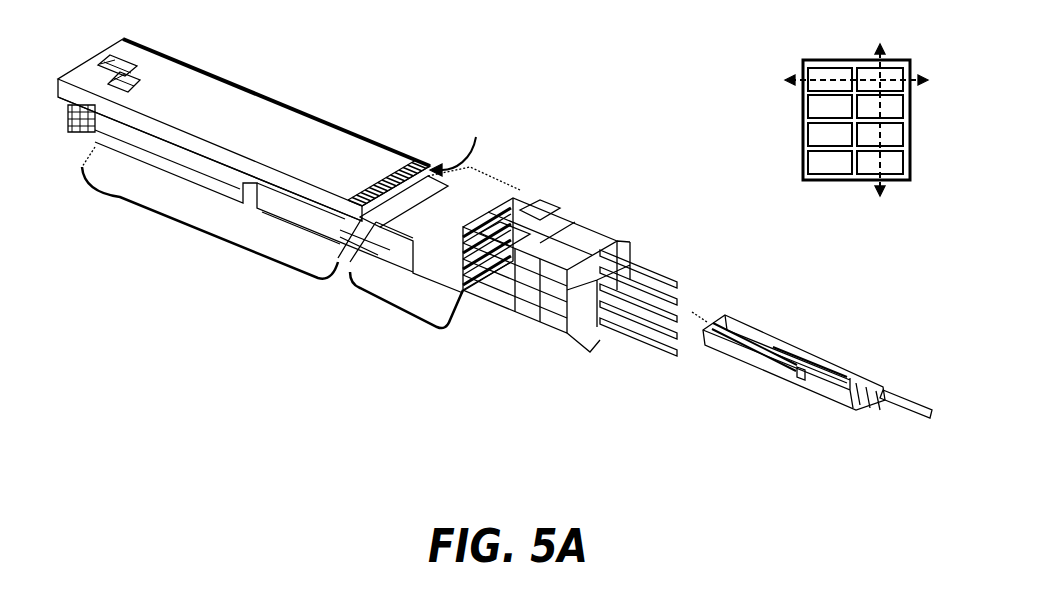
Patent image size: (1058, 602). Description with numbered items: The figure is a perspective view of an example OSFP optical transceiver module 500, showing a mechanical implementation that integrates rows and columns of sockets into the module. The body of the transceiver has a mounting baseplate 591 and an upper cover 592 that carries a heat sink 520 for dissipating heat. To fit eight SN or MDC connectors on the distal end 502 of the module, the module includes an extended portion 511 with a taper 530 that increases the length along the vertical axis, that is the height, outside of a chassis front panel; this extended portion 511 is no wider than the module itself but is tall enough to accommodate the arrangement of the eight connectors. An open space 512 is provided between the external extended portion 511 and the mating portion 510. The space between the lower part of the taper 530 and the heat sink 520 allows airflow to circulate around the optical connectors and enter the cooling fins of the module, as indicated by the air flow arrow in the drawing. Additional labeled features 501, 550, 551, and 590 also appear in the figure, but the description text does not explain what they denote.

The OSFP optical transceiver module 500 is at (766, 113).
The heat sink handle block 501 is at (135, 45).
The distal end 502 is at (523, 190).
The mating portion 510 is at (205, 229).
The extended portion 511 is at (397, 313).
The open space 512 is at (365, 273).
The heat sink 520 is at (403, 170).
The taper 530 is at (393, 212).
The optical plug 550 is at (771, 336).
The optical cable 551 is at (920, 408).
The port arrangement 590 is at (823, 181).
The mounting baseplate 591 is at (276, 222).
The upper cover 592 is at (327, 122).